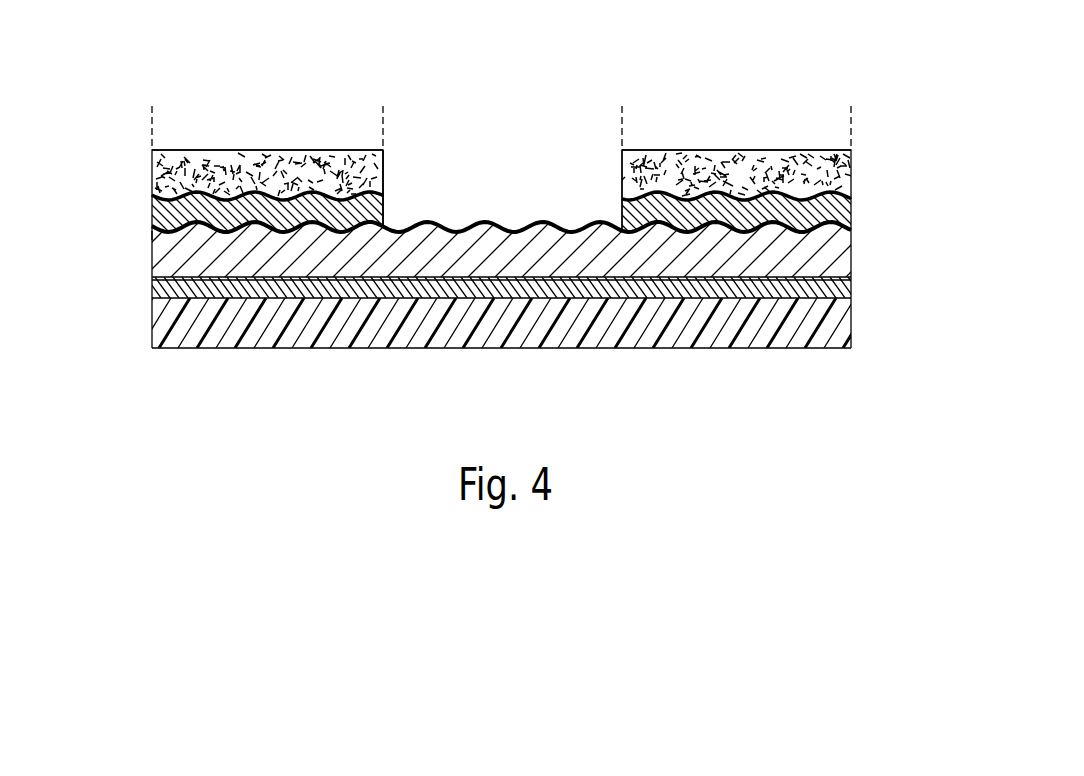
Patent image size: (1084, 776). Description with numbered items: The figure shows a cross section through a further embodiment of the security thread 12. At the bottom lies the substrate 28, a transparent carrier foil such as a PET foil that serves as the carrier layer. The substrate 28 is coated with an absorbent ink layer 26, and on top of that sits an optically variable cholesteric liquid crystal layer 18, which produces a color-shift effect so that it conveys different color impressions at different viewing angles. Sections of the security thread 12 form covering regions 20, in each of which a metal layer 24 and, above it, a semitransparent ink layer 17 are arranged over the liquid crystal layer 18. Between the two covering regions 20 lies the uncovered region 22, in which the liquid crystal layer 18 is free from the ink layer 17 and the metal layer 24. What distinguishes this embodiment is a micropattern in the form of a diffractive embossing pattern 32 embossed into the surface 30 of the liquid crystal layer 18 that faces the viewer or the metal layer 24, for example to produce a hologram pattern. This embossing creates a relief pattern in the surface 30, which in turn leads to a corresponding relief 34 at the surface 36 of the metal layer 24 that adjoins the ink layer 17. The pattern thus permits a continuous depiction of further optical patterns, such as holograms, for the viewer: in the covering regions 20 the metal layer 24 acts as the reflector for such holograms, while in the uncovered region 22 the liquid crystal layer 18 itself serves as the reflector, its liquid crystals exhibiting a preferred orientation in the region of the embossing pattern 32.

The security thread 12 is at (147, 150).
The semitransparent ink layer 17 is at (160, 170).
The cholesteric liquid crystal layer 18 is at (840, 255).
The covering regions 20 is at (851, 116).
The uncovered region 22 is at (622, 116).
The metal layer 24 is at (163, 218).
The absorbent ink layer 26 is at (840, 288).
The substrate 28 is at (840, 327).
The surface of the liquid crystal layer 30 is at (165, 237).
The diffractive embossing pattern 32 is at (840, 228).
The relief 34 is at (163, 196).
The surface of the metal layer 36 is at (368, 188).